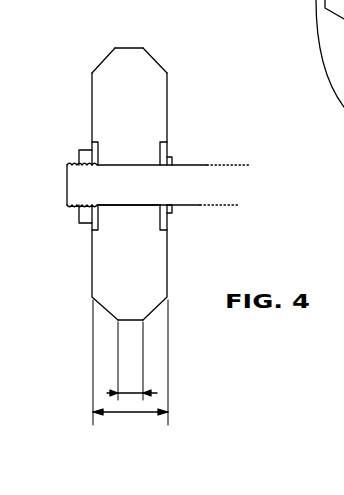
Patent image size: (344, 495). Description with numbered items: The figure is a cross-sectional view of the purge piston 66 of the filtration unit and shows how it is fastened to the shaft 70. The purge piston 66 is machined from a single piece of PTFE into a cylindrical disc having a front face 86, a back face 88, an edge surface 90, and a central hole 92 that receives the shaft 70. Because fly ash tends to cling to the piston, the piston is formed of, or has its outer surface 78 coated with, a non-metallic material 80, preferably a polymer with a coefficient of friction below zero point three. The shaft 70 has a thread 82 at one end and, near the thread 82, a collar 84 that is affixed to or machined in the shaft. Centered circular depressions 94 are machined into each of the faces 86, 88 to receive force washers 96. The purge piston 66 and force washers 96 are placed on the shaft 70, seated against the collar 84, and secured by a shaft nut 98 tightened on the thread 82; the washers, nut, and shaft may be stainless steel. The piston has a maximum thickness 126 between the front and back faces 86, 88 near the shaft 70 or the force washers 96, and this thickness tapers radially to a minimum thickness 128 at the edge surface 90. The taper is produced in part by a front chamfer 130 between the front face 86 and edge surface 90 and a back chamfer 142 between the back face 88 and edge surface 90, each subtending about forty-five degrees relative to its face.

The purge piston 66 is at (27, 282).
The shaft 70 is at (191, 198).
The outer surface 78 is at (92, 108).
The non-metallic material 80 is at (157, 127).
The thread 82 is at (76, 163).
The collar 84 is at (173, 158).
The front face 86 is at (92, 257).
The back face 88 is at (168, 263).
The edge surface 90 is at (135, 322).
The central hole 92 is at (114, 207).
The centered circular depressions 94 is at (162, 152).
The force washers 96 is at (92, 232).
The shaft nut 98 is at (85, 218).
The thickness 126 is at (133, 414).
The minimum thickness 128 is at (125, 396).
The front chamfer 130 is at (100, 65).
The back chamfer 142 is at (163, 66).